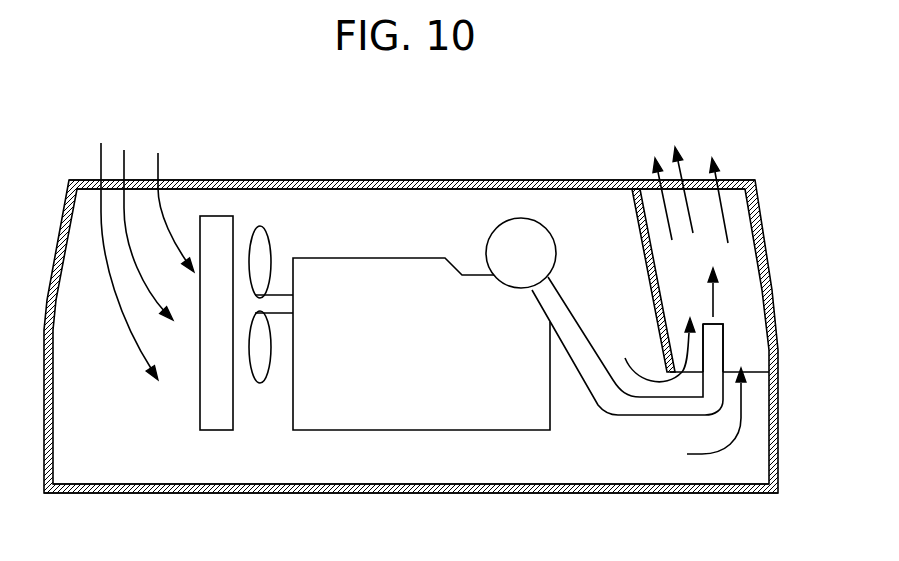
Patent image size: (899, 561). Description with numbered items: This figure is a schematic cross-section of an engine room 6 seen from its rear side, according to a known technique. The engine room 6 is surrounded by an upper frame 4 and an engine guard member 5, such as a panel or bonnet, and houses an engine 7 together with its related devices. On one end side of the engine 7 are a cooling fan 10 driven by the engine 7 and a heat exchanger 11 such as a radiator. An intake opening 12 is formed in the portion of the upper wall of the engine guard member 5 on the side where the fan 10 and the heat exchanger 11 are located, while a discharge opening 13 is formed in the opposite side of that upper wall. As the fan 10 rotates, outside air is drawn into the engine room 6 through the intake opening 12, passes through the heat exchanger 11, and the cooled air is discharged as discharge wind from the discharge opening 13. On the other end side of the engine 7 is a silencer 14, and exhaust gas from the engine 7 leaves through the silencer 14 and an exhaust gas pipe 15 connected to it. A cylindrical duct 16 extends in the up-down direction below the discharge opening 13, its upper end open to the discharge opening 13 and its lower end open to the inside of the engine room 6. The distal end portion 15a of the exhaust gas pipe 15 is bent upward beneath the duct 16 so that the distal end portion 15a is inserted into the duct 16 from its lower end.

The upper frame 4 is at (304, 494).
The engine guard member 5 is at (417, 180).
The engine room 6 is at (433, 478).
The engine 7 is at (363, 258).
The cooling fan 10 is at (252, 224).
The heat exchanger 11 is at (212, 216).
The intake opening 12 is at (143, 181).
The discharge opening 13 is at (690, 178).
The silencer 14 is at (521, 218).
The exhaust gas pipe 15 is at (636, 416).
The distal end portion 15a is at (724, 352).
The cylindrical duct 16 is at (640, 250).